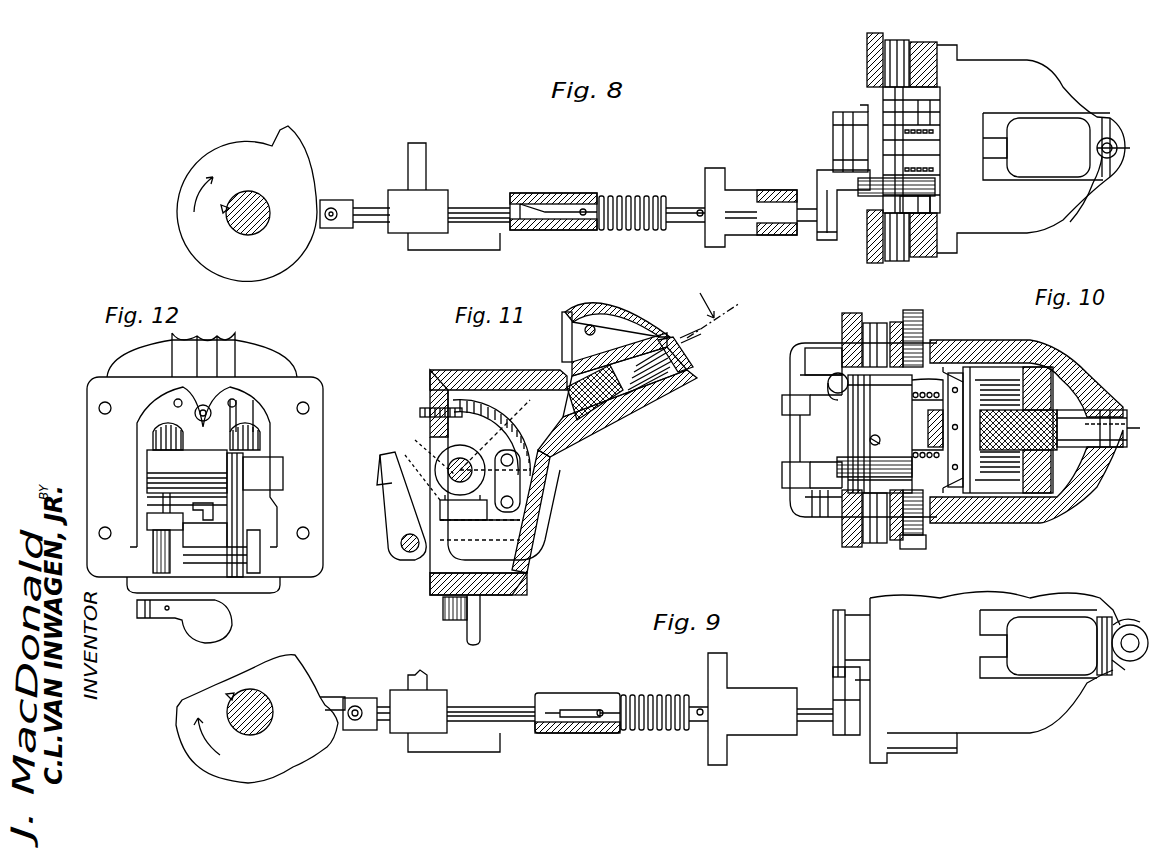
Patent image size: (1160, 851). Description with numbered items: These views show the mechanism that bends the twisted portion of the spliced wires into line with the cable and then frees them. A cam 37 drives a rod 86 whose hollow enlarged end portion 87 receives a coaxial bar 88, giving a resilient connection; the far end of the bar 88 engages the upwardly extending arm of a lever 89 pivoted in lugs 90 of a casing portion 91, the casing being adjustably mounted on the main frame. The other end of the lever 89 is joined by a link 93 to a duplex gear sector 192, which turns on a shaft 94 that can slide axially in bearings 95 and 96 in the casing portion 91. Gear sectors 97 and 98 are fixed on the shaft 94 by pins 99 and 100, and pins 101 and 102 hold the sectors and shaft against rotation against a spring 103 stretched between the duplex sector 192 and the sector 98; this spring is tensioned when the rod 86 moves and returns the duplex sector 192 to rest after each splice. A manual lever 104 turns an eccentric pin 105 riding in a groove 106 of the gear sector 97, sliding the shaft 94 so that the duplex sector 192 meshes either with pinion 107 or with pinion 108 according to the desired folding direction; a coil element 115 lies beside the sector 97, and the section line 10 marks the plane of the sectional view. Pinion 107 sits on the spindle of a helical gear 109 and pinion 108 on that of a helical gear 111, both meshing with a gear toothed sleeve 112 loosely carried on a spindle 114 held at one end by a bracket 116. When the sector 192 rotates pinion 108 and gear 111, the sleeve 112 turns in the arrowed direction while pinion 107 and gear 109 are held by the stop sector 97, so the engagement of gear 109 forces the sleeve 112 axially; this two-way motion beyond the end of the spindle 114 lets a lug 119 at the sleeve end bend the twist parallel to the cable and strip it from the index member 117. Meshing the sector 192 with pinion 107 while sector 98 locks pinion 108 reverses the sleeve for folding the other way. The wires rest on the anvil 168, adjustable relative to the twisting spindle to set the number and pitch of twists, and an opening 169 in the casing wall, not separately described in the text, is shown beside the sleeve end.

In FIG. 11, the section line 10 is at (353, 520).
In FIG. 8, the cam 37 is at (307, 160).
In FIG. 9, the cam 37 is at (300, 683).
In FIG. 8, the rod 86 is at (490, 200).
In FIG. 9, the rod 86 is at (498, 705).
In FIG. 8, the hollow enlarged end portion 87 is at (562, 195).
In FIG. 9, the hollow enlarged end portion 87 is at (573, 695).
In FIG. 8, the bar 88 is at (683, 200).
In FIG. 9, the bar 88 is at (698, 695).
In FIG. 8, the lever 89 is at (822, 240).
In FIG. 11, the lever 89 is at (380, 460).
In FIG. 9, the lever 89 is at (833, 672).
In FIG. 11, the lugs 90 is at (432, 580).
In FIG. 10, the lugs 90 is at (782, 404).
In FIG. 9, the lugs 90 is at (833, 620).
In FIG. 8, the casing portion 91 is at (938, 45).
In FIG. 12, the casing portion 91 is at (88, 417).
In FIG. 11, the casing portion 91 is at (545, 525).
In FIG. 10, the casing portion 91 is at (1120, 405).
In FIG. 9, the casing portion 91 is at (995, 678).
In FIG. 11, the link 93 is at (512, 478).
In FIG. 8, the shaft 94 is at (894, 262).
In FIG. 12, the shaft 94 is at (145, 485).
In FIG. 11, the shaft 94 is at (420, 412).
In FIG. 10, the shaft 94 is at (870, 548).
In FIG. 8, the bearing 95 is at (902, 42).
In FIG. 8, the bearing 96 is at (872, 264).
In FIG. 8, the gear sector 97 is at (872, 97).
In FIG. 12, the gear sector 97 is at (157, 455).
In FIG. 10, the gear sector 97 is at (880, 434).
In FIG. 8, the gear sector 98 is at (930, 205).
In FIG. 12, the gear sector 98 is at (268, 447).
In FIG. 10, the gear sector 98 is at (938, 500).
In FIG. 10, the pin 99 is at (828, 372).
In FIG. 10, the pin 100 is at (848, 530).
In FIG. 10, the pin 101 is at (952, 371).
In FIG. 10, the pin 102 is at (893, 548).
In FIG. 8, the spring 103 is at (930, 188).
In FIG. 12, the lever 104 is at (230, 618).
In FIG. 11, the lever 104 is at (481, 624).
In FIG. 12, the eccentric pin 105 is at (145, 535).
In FIG. 11, the eccentric pin 105 is at (397, 530).
In FIG. 11, the groove 106 is at (430, 448).
In FIG. 10, the pinion 107 is at (968, 372).
In FIG. 10, the pinion 108 is at (940, 480).
In FIG. 10, the helical gear 109 is at (1070, 368).
In FIG. 10, the helical gear 111 is at (1040, 480).
In FIG. 10, the gear toothed sleeve 112 is at (1005, 445).
In FIG. 9, the gear toothed sleeve 112 is at (1108, 676).
In FIG. 8, the spindle 114 is at (1083, 199).
In FIG. 10, the spindle 114 is at (1103, 480).
In FIG. 10, the spring 115 is at (930, 430).
In FIG. 10, the bracket 116 is at (1005, 372).
In FIG. 11, the index member 117 is at (684, 337).
In FIG. 10, the index member 117 is at (1118, 448).
In FIG. 9, the lug 119 is at (1135, 662).
In FIG. 11, the anvil 168 is at (632, 318).
In FIG. 9, the opening 169 is at (1040, 667).
In FIG. 8, the duplex gear sector 192 is at (845, 148).
In FIG. 11, the duplex gear sector 192 is at (490, 420).
In FIG. 10, the duplex gear sector 192 is at (860, 432).